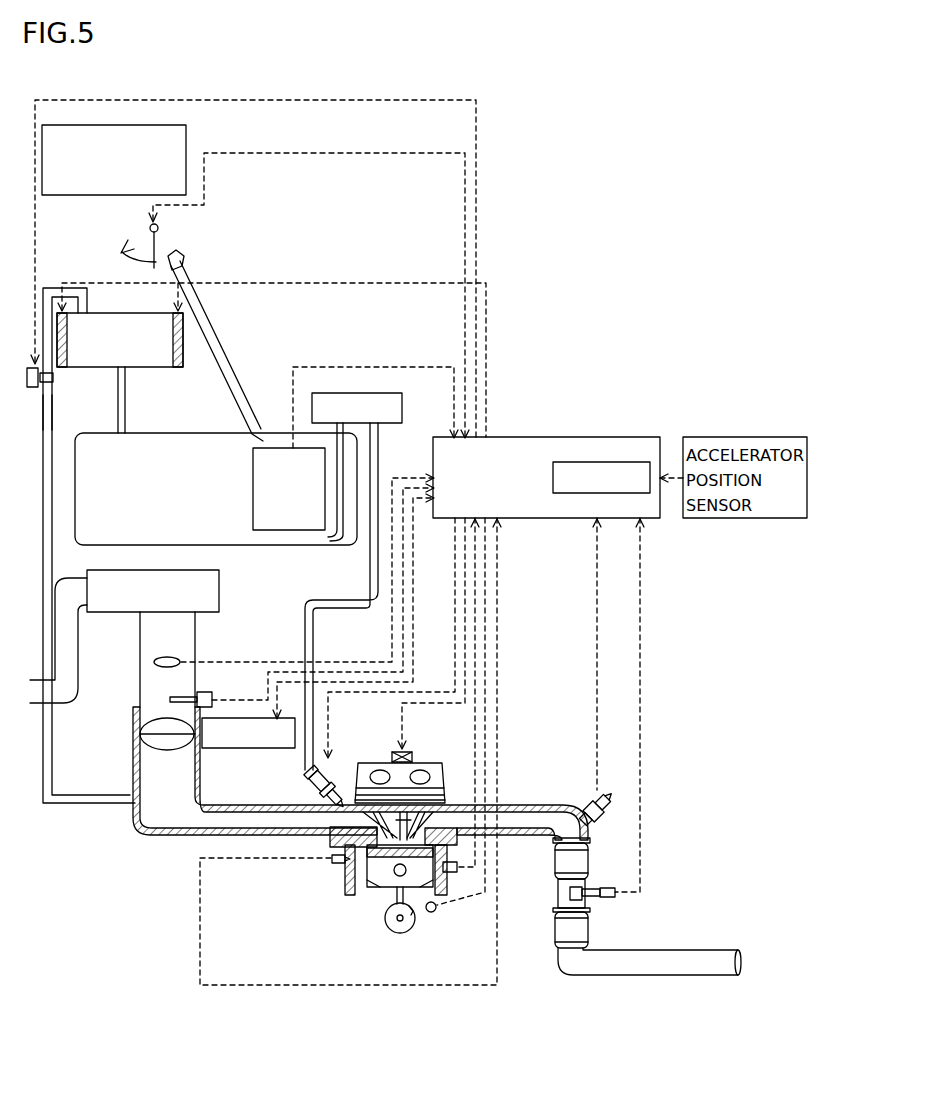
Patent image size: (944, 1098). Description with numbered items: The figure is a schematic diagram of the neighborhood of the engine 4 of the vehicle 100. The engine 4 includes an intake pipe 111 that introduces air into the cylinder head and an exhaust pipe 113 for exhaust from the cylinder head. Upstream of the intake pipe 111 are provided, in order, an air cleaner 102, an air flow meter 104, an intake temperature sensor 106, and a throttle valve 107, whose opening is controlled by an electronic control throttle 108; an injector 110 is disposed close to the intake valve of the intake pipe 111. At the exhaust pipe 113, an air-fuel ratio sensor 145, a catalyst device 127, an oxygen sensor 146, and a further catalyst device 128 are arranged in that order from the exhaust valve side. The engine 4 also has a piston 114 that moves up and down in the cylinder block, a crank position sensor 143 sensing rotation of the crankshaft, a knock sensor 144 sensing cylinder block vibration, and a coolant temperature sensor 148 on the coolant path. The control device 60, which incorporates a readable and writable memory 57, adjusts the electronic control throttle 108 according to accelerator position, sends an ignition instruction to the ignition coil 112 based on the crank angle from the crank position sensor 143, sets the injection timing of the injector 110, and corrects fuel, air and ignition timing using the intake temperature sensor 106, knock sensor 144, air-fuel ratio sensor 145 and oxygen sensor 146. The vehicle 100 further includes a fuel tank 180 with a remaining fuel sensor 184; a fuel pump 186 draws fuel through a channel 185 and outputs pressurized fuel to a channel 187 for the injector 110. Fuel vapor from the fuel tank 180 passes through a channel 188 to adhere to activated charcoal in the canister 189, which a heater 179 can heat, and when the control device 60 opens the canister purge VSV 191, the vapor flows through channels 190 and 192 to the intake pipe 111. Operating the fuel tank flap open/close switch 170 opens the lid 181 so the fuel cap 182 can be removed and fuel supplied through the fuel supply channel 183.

The vehicle 100 is at (670, 150).
The fuel tank flap open/close switch 170 is at (140, 126).
The lid 181 is at (163, 240).
The fuel cap 182 is at (190, 254).
The fuel supply channel 183 is at (220, 341).
The heater 179 is at (185, 333).
The canister 189 is at (115, 312).
The channel 190 is at (50, 285).
The canister purge VSV 191 is at (40, 383).
The channel 192 is at (48, 420).
The channel 188 is at (126, 393).
The fuel tank 180 is at (202, 433).
The remaining fuel sensor 184 is at (275, 531).
The fuel pump 186 is at (352, 394).
The channel 185 is at (334, 540).
The channel 187 is at (380, 444).
The control device 60 is at (587, 437).
The memory 57 is at (600, 463).
The air cleaner 102 is at (172, 571).
The air flow meter 104 is at (153, 662).
The throttle valve 107 is at (155, 722).
The intake temperature sensor 106 is at (210, 693).
The electronic control throttle 108 is at (230, 749).
The intake pipe 111 is at (166, 838).
The exhaust pipe 113 is at (520, 805).
The injector 110 is at (304, 792).
The engine 4 is at (457, 769).
The piston 114 is at (377, 880).
The ignition coil 112 is at (408, 751).
The knock sensor 144 is at (333, 863).
The coolant temperature sensor 148 is at (452, 875).
The crank position sensor 143 is at (432, 914).
The air-fuel ratio sensor 145 is at (590, 790).
The catalyst device 127 is at (553, 862).
The oxygen sensor 146 is at (612, 898).
The catalyst device 128 is at (553, 928).